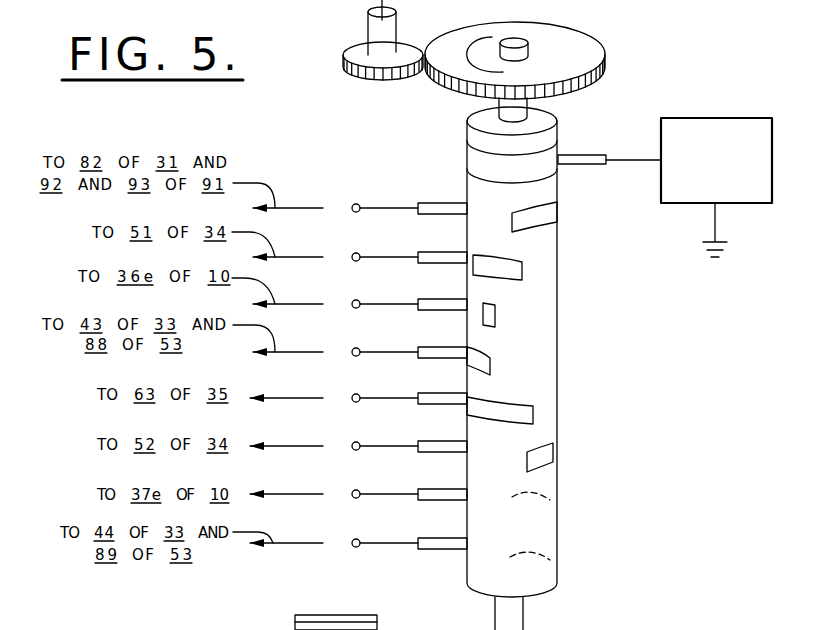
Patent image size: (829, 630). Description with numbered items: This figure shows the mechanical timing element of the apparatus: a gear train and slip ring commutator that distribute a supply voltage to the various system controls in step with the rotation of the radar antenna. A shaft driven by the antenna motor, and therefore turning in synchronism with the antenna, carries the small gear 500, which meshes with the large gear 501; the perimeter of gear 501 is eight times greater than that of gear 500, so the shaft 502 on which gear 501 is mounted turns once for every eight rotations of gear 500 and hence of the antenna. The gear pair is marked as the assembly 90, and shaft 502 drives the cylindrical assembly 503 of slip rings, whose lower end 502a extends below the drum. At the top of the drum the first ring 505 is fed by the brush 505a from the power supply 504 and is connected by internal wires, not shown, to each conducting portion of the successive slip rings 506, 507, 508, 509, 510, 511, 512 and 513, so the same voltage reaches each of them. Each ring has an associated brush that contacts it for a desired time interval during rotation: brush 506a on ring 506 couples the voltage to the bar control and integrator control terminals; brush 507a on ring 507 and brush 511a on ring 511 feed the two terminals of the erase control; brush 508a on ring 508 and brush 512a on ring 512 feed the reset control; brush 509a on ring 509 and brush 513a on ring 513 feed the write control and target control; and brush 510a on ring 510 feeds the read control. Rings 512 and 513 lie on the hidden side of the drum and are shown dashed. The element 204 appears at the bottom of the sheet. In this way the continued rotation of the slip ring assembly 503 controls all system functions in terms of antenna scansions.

The gear assembly 90 is at (530, 13).
The gear 500 is at (343, 62).
The gear 501 is at (588, 40).
The shaft 502 is at (524, 113).
The lower shaft 502a is at (523, 608).
The assembly of slip rings 503 is at (462, 143).
The power supply 504 is at (690, 118).
The first ring 505 is at (558, 166).
The brush 505a is at (584, 155).
The slip ring 506 is at (560, 204).
The slip ring 507 is at (522, 265).
The slip ring 508 is at (495, 310).
The slip ring 509 is at (490, 358).
The slip ring 510 is at (540, 410).
The slip ring 511 is at (553, 444).
The slip ring 512 is at (552, 498).
The slip ring 513 is at (552, 561).
The brush 506a is at (427, 203).
The brush 507a is at (427, 252).
The brush 508a is at (427, 299).
The brush 509a is at (427, 347).
The brush 510a is at (427, 393).
The brush 511a is at (427, 441).
The brush 512a is at (427, 489).
The brush 513a is at (427, 538).
The switch 204 is at (293, 628).